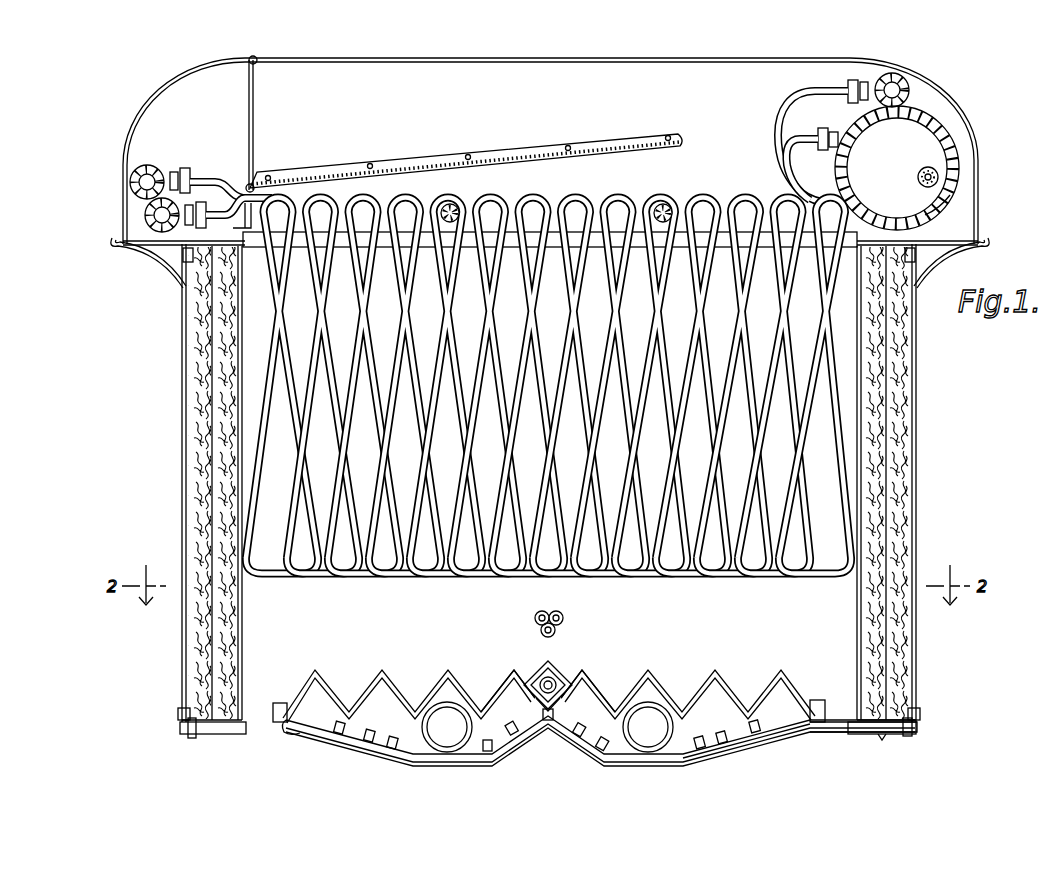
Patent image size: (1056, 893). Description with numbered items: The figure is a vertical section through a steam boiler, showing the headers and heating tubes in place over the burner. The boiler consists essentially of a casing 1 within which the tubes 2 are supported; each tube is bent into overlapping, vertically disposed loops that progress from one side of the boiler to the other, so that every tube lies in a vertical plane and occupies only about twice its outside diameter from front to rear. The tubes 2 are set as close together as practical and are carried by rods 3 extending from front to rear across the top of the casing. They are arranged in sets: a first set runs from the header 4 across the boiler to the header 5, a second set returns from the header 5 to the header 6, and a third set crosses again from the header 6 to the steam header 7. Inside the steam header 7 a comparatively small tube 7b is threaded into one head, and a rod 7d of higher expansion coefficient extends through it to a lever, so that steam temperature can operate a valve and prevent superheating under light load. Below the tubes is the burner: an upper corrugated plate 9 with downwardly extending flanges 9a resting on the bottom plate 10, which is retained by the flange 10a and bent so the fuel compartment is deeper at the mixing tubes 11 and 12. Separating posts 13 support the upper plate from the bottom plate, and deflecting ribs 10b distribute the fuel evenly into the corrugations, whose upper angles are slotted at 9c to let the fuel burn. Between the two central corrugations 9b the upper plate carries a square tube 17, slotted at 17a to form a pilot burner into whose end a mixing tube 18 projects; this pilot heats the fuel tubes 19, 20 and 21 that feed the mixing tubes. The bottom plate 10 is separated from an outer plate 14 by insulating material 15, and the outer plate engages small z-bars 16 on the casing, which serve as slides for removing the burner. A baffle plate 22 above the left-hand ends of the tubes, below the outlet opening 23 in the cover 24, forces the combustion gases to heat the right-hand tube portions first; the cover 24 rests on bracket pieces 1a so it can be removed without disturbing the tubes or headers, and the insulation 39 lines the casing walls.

The casing 1 is at (185, 372).
The bracket pieces 1a is at (143, 253).
The tubes 2 is at (265, 410).
The rods 3 is at (456, 207).
The header 4 is at (147, 173).
The header 5 is at (910, 90).
The header 6 is at (145, 214).
The steam header 7 is at (952, 143).
The tube 7b is at (922, 172).
The rod 7d is at (940, 192).
The upper corrugated plate 9 is at (400, 697).
The flanges 9a is at (297, 732).
The central corrugations 9b is at (510, 680).
The slots 9c is at (447, 673).
The bottom plate 10 is at (735, 757).
The flange 10a is at (273, 708).
The deflecting ribs 10b is at (345, 735).
The mixing tube 11 is at (457, 752).
The mixing tube 12 is at (640, 755).
The separating posts 13 is at (555, 737).
The outer plate 14 is at (775, 740).
The insulating material 15 is at (842, 737).
The z-bars 16 is at (218, 736).
The square tube 17 is at (531, 676).
The slot 17a is at (547, 668).
The mixing tube 18 is at (538, 697).
The tube 19 is at (537, 612).
The tube 20 is at (562, 614).
The tube 21 is at (556, 630).
The baffle plate 22 is at (540, 142).
The outlet opening 23 is at (385, 62).
The cover 24 is at (980, 192).
The insulation 39 is at (190, 463).